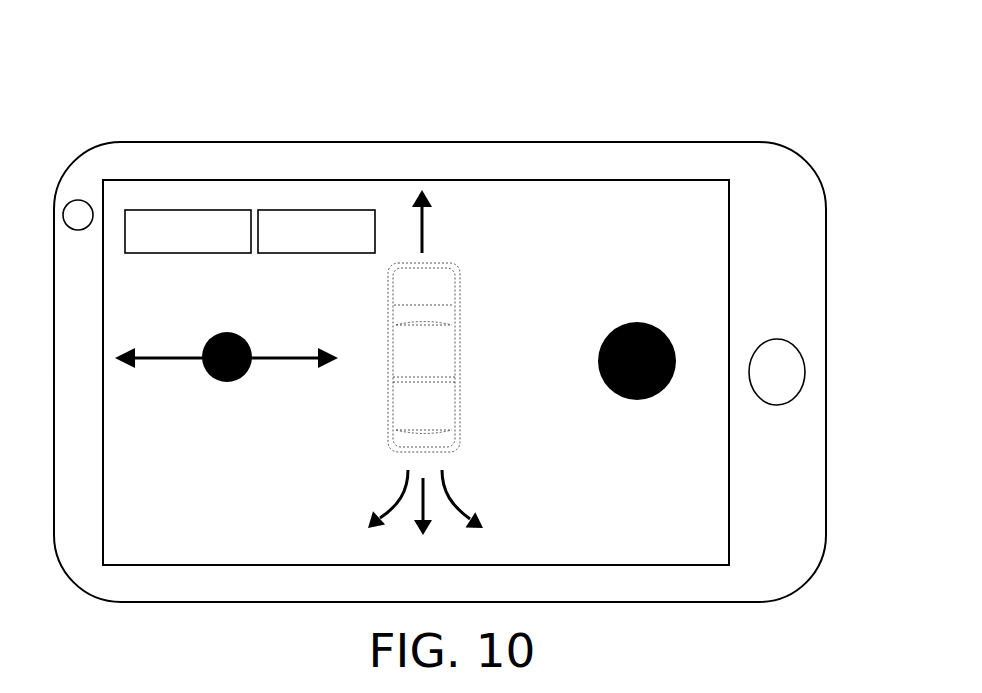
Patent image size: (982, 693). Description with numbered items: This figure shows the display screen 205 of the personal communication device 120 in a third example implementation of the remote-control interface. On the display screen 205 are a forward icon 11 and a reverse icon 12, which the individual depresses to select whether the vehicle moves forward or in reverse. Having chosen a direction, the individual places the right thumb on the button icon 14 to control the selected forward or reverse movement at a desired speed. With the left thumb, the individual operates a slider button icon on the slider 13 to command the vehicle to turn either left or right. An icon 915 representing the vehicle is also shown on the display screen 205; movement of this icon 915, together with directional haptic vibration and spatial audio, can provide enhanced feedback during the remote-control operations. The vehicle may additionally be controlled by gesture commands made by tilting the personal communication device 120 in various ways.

The personal communication device 120 is at (572, 142).
The display screen 205 is at (515, 203).
The forward icon 11 is at (213, 254).
The reverse icon 12 is at (325, 254).
The slider 13 is at (248, 411).
The button icon 14 is at (613, 305).
The icon 915 is at (482, 335).